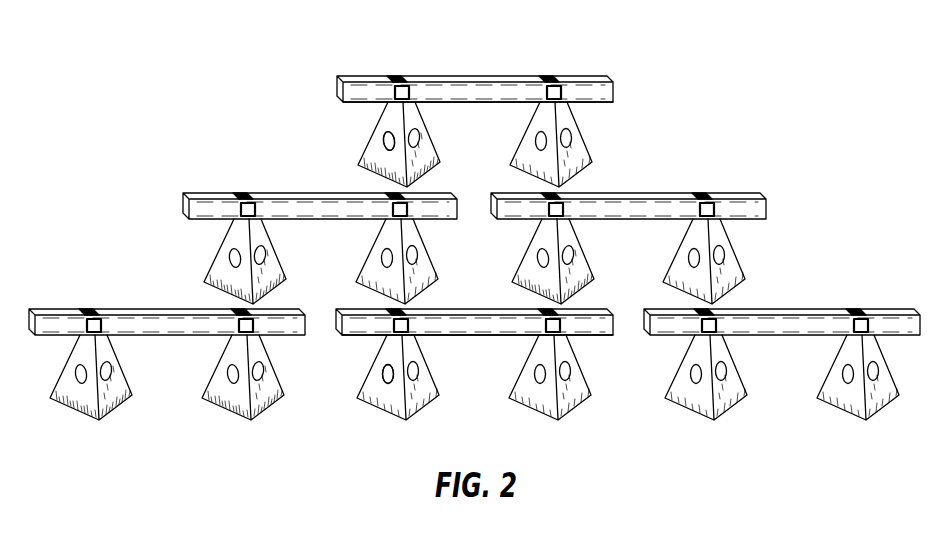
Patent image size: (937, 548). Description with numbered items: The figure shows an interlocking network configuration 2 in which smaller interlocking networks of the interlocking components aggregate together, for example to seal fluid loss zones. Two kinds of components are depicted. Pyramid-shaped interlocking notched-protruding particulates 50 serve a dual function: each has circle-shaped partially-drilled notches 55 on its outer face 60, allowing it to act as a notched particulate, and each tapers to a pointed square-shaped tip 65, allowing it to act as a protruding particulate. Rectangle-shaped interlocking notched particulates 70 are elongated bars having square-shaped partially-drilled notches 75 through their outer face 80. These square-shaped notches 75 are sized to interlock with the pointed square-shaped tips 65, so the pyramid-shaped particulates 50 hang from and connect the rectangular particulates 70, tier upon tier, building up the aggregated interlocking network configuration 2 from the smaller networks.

The interlocking network configuration 2 is at (717, 113).
The pyramid-shaped interlocking notched-protruding particulate 50 is at (588, 142).
The circle-shaped partially-drilled notch 55 is at (385, 140).
The outer face 60 is at (375, 257).
The pointed square-shaped tip 65 is at (545, 103).
The rectangle-shaped interlocking notched particulate 70 is at (475, 78).
The square-shaped partially-drilled notch 75 is at (553, 78).
The outer face 80 is at (365, 103).